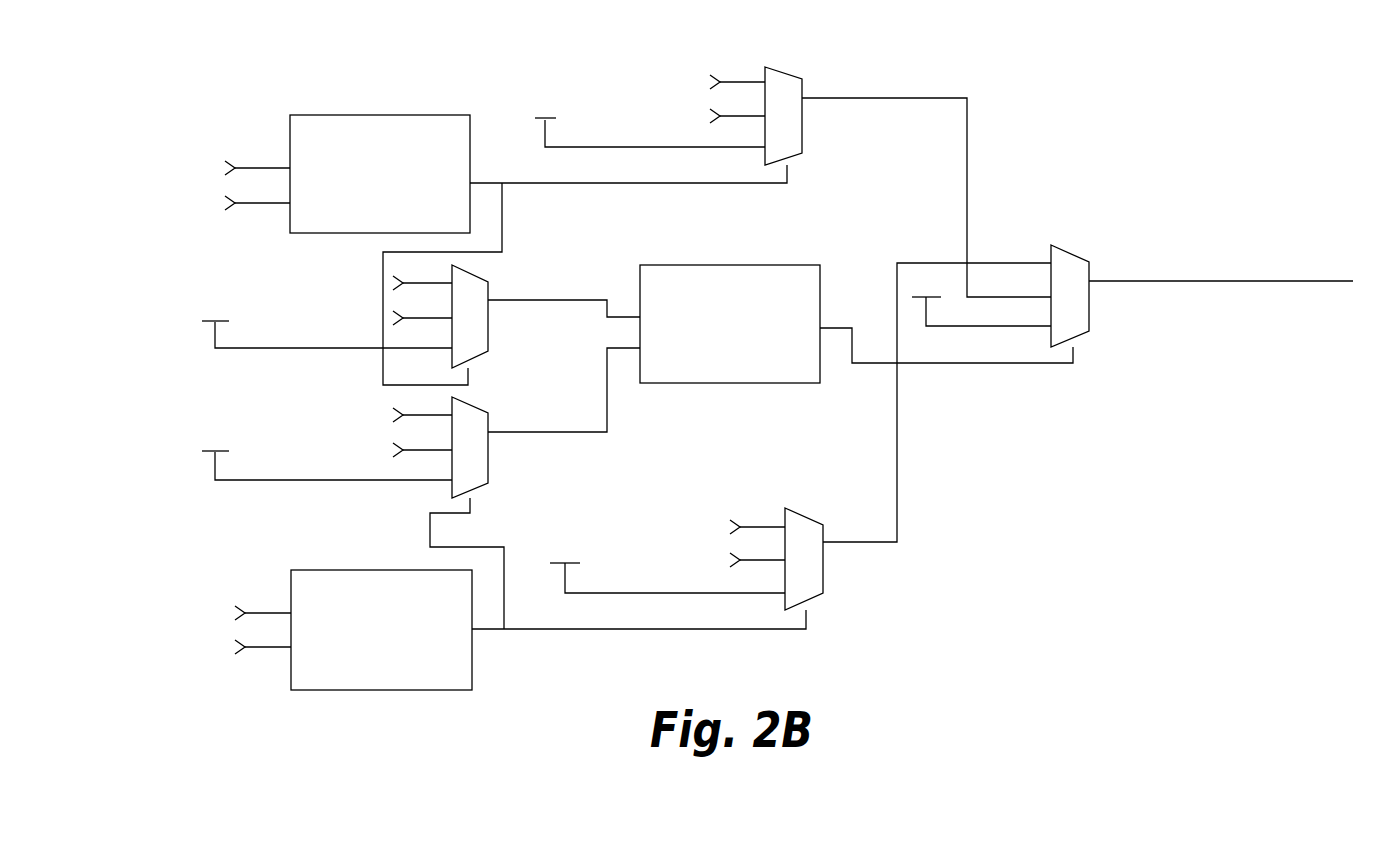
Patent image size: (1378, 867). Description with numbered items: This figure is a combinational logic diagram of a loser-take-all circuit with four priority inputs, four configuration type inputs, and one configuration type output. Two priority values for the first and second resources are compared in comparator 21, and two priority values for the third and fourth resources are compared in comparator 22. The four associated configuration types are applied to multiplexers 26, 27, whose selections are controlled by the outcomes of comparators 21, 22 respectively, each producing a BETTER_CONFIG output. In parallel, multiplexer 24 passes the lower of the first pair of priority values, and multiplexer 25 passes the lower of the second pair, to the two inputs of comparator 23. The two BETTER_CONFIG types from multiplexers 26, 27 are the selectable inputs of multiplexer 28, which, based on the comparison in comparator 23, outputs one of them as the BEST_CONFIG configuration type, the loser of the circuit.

The comparator 21 is at (372, 115).
The comparator 22 is at (472, 657).
The comparator 23 is at (725, 265).
The multiplexer 24 is at (488, 283).
The multiplexer 25 is at (488, 413).
The multiplexer 26 is at (790, 58).
The multiplexer 27 is at (823, 577).
The multiplexer 28 is at (1131, 305).